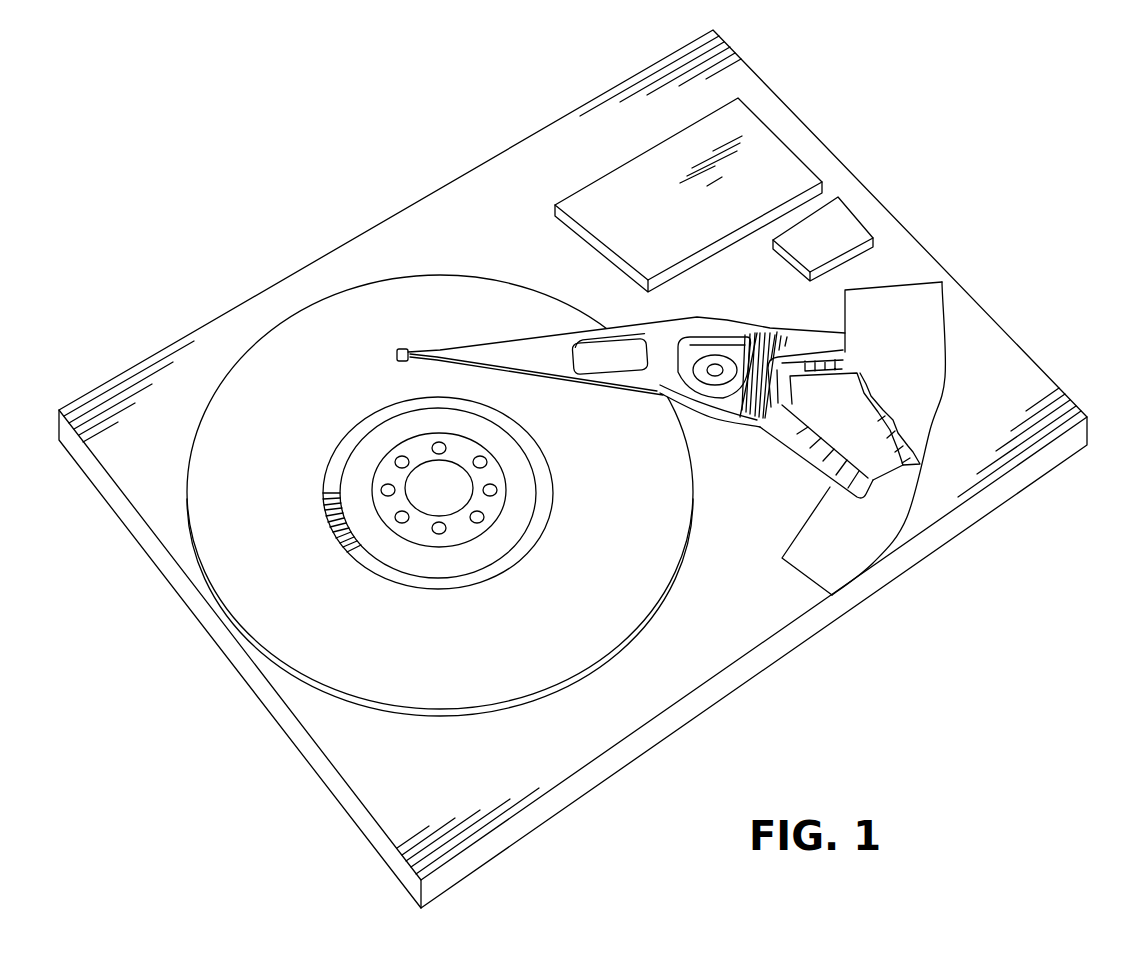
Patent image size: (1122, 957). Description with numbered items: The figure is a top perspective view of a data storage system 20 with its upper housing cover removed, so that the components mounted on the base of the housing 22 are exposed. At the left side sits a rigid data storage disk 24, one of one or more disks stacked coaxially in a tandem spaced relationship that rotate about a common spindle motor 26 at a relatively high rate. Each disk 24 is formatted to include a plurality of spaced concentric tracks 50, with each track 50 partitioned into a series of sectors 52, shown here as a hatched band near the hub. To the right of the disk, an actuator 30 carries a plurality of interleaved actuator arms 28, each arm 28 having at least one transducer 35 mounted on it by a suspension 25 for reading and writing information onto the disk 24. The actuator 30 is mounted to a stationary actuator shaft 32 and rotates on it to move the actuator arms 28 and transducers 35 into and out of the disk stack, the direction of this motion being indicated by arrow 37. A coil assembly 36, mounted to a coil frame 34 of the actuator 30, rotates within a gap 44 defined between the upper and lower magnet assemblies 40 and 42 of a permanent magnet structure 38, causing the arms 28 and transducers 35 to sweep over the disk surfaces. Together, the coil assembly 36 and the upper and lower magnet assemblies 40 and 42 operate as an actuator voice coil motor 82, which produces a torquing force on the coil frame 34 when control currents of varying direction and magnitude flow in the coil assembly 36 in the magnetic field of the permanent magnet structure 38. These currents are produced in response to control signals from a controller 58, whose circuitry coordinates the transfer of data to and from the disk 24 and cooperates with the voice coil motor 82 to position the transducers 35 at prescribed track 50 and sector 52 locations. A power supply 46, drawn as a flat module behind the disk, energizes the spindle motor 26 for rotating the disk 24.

The data storage system 20 is at (573, 469).
The base plate 22 is at (745, 672).
The rigid data storage disk 24 is at (251, 476).
The suspension 25 is at (413, 358).
The spindle motor 26 is at (460, 512).
The actuator arm 28 is at (545, 358).
The actuator 30 is at (730, 413).
The actuator shaft 32 is at (715, 362).
The coil frame 34 is at (775, 335).
The transducer 35 is at (398, 352).
The coil assembly 36 is at (792, 375).
The actuator assembly 37 is at (634, 398).
The permanent magnet structure 38 is at (882, 433).
The upper magnet assembly 40 is at (947, 353).
The lower magnet assembly 42 is at (802, 558).
The gap 44 is at (912, 462).
The power supply 46 is at (628, 231).
The track 50 is at (342, 442).
The sector 52 is at (327, 517).
The controller 58 is at (812, 246).
The actuator voice coil motor 82 is at (822, 490).